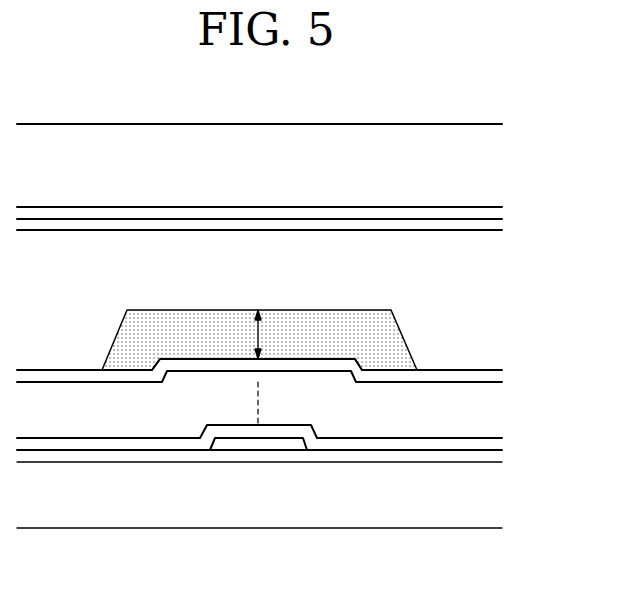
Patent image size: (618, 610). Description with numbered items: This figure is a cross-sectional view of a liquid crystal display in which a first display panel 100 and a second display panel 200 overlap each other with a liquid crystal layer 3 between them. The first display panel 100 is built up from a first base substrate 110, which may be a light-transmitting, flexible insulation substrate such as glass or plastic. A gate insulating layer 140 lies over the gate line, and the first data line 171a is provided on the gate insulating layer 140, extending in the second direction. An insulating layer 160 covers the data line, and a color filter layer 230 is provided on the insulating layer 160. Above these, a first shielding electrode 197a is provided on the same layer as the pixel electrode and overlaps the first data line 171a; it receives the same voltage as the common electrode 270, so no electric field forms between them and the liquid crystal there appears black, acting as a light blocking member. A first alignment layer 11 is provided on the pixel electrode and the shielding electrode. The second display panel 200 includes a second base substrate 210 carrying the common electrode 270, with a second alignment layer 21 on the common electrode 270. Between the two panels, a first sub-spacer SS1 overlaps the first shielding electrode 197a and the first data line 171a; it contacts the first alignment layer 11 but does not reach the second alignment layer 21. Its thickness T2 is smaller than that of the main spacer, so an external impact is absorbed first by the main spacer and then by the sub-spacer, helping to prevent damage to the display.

The liquid crystal layer 3 is at (481, 282).
The first display panel 100 is at (295, 473).
The first base substrate 110 is at (346, 512).
The gate insulating layer 140 is at (292, 457).
The insulating layer 160 is at (160, 443).
The first data line 171a is at (238, 443).
The first shielding electrode 197a is at (339, 376).
The first alignment layer 11 is at (476, 376).
The color filter layer 230 is at (83, 407).
The first sub-spacer SS1 is at (386, 337).
The thickness of the sub-spacer T2 is at (273, 334).
The second display panel 200 is at (295, 153).
The second base substrate 210 is at (441, 148).
The common electrode 270 is at (355, 213).
The second alignment layer 21 is at (283, 225).